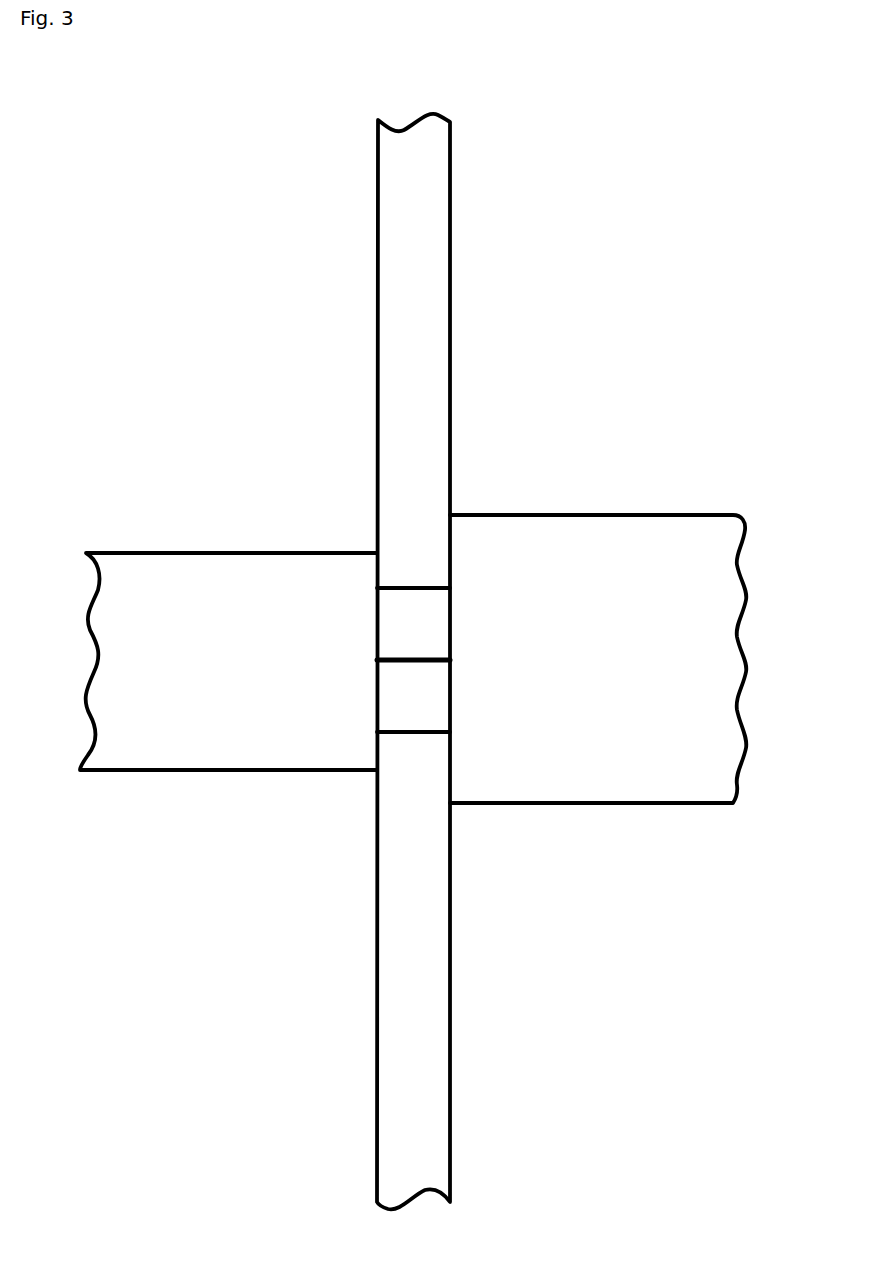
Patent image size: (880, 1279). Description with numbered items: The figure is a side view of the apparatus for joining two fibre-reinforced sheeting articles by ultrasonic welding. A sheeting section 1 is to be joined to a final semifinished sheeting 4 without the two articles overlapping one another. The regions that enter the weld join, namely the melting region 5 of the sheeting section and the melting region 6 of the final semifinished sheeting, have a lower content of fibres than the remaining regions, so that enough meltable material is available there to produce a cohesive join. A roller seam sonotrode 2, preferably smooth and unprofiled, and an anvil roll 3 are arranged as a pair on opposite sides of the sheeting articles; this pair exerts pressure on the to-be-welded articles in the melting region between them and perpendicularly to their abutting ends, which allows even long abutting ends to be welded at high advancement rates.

The sheeting section 1 is at (412, 1118).
The roller seam sonotrode 2 is at (228, 718).
The anvil roll 3 is at (600, 748).
The final semifinished sheeting 4 is at (423, 325).
The melting region of the sheeting section 5 is at (408, 690).
The melting region of the final semifinished sheeting 6 is at (428, 630).